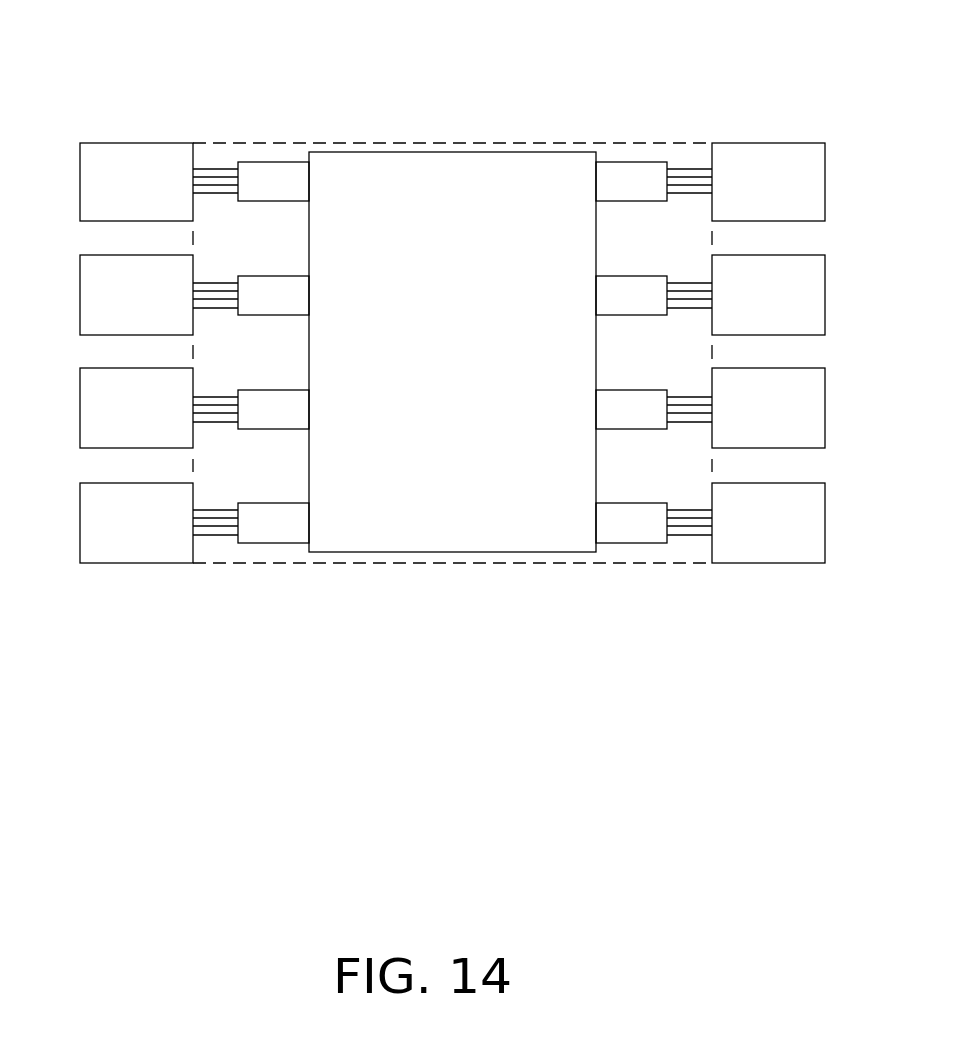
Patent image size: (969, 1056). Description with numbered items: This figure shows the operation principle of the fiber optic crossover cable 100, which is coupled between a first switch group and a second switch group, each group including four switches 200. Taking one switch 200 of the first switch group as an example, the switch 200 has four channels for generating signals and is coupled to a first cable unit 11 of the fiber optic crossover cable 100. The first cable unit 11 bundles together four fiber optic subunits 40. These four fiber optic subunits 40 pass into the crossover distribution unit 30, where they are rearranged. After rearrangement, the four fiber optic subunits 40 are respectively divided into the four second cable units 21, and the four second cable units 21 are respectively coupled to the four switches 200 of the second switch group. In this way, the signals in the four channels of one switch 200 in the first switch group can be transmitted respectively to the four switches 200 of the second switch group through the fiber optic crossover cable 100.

The fiber optic crossover cable 100 is at (668, 113).
The switch 200 is at (133, 152).
The crossover distribution unit 30 is at (400, 165).
The first cable unit 11 is at (280, 172).
The second cable unit 21 is at (622, 170).
The fiber optic subunit 40 is at (217, 168).